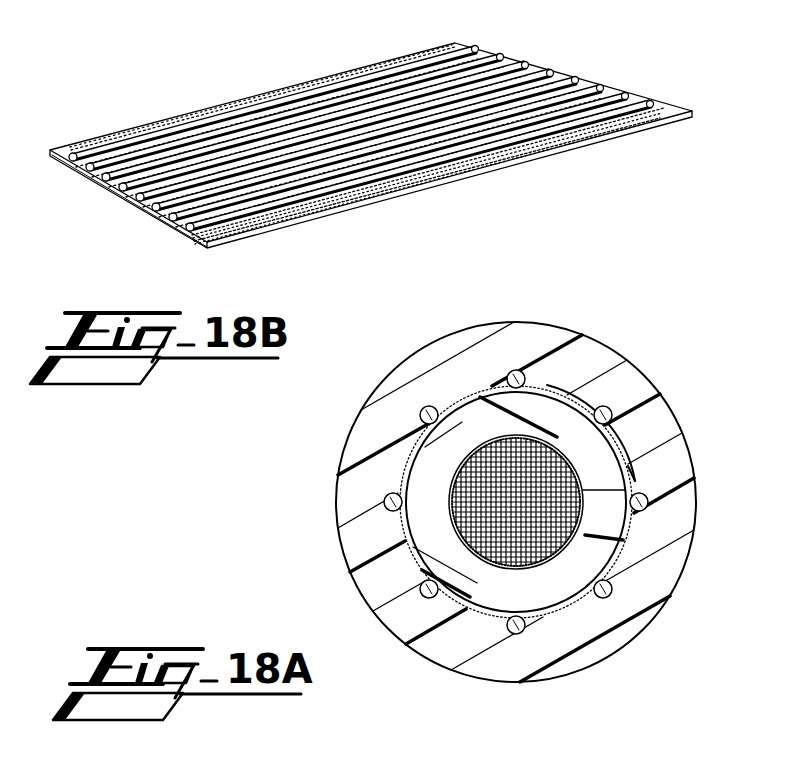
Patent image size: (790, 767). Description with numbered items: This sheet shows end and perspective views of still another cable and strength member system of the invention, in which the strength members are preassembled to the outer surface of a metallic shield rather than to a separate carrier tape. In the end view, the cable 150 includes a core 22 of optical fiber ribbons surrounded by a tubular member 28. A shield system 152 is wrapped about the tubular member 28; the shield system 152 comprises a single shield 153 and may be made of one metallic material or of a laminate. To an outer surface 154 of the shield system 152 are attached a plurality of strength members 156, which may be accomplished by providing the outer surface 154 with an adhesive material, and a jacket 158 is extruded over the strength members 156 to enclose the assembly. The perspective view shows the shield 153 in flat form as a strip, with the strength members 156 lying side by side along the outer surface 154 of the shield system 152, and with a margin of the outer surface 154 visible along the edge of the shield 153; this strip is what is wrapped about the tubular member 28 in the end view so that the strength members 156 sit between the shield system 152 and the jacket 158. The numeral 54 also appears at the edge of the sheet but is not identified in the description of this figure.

In FIG. 18A, the cable 150 is at (298, 491).
In FIG. 18B, the shield system 152 is at (583, 169).
In FIG. 18A, the shield system 152 is at (395, 529).
In FIG. 18B, the shield 153 is at (383, 201).
In FIG. 18B, the outer surface 154 is at (262, 234).
In FIG. 18B, the strength members 156 is at (198, 139).
In FIG. 18A, the strength members 156 is at (515, 631).
In FIG. 18A, the jacket 158 is at (590, 350).
In FIG. 18A, the tubular member 28 is at (475, 417).
In FIG. 18A, the core 22 is at (545, 437).
In FIG. 18A, the partially visible numeral 54 is at (601, 762).